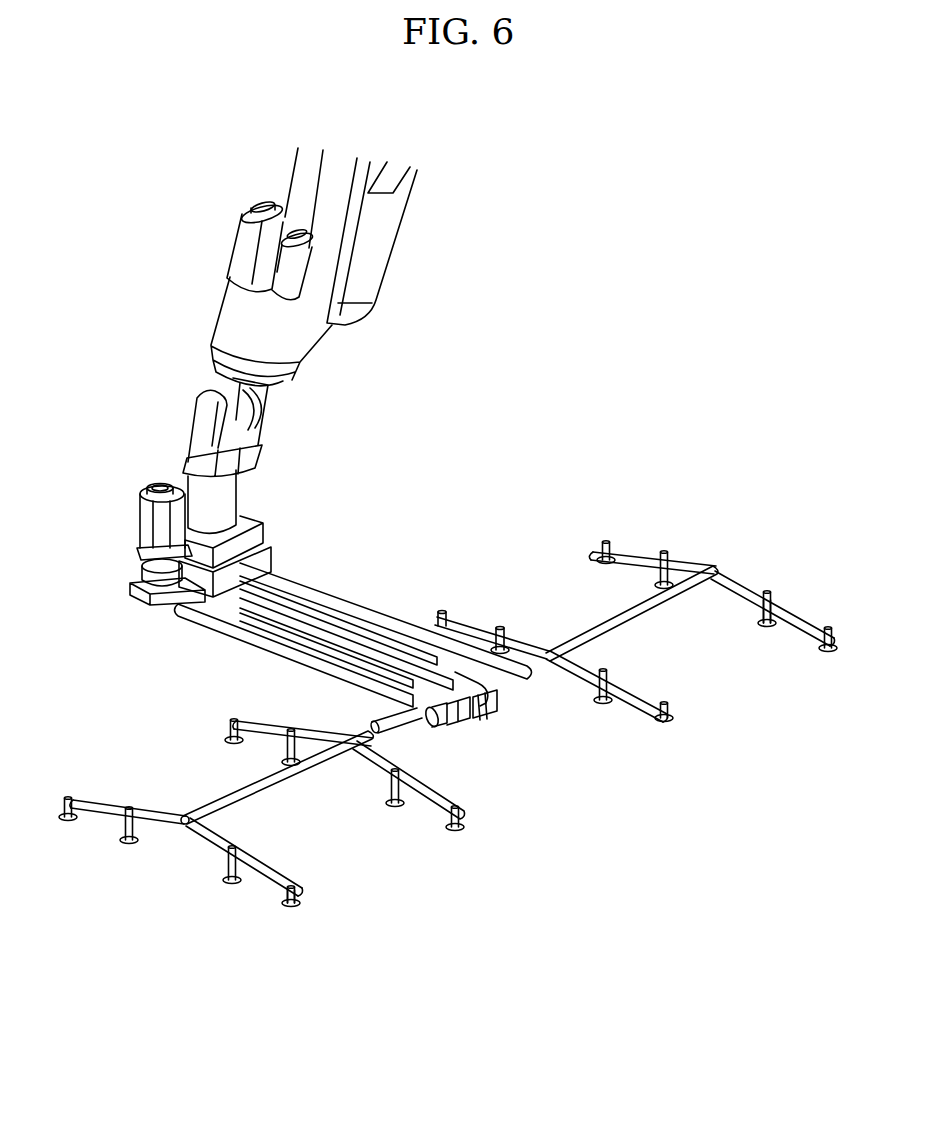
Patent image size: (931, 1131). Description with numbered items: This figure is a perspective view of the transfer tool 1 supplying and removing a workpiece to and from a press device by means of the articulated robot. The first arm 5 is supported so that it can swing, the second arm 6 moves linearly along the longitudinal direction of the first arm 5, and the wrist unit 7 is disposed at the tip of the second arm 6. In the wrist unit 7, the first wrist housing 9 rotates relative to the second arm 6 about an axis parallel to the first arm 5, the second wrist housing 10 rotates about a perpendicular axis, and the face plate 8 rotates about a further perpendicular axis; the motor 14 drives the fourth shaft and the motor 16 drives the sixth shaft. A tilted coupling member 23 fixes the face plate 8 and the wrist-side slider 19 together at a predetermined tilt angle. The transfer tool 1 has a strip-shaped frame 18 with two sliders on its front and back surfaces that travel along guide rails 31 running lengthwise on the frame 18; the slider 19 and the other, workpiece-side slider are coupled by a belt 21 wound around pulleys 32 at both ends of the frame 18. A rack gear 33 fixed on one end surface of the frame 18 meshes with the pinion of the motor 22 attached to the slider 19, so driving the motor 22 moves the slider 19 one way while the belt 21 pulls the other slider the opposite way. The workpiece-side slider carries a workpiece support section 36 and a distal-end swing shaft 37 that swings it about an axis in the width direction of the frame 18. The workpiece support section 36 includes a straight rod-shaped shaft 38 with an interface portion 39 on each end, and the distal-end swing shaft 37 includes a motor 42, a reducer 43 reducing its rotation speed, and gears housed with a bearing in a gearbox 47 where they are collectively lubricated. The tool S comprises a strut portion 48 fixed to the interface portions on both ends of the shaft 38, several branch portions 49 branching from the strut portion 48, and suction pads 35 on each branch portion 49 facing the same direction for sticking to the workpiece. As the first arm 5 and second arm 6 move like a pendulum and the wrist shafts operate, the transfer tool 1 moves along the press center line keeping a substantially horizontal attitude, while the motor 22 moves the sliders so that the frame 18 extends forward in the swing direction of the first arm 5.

The transfer tool 1 is at (400, 505).
The first arm 5 is at (385, 230).
The second arm 6 is at (307, 173).
The wrist unit 7 is at (290, 427).
The face plate 8 is at (188, 462).
The first wrist housing 9 is at (215, 352).
The second wrist housing 10 is at (210, 413).
The motor of the fourth shaft 14 is at (243, 250).
The motor of the sixth shaft 16 is at (304, 268).
The frame 18 is at (317, 590).
The slider 19 is at (272, 567).
The belt 21 is at (350, 627).
The motor 22 is at (147, 523).
The tilted coupling member 23 is at (238, 507).
The guide rails 31 is at (407, 628).
The pulleys 32 is at (485, 718).
The rack gear 33 is at (227, 617).
The suction pads 35 is at (767, 630).
The workpiece support section 36 is at (359, 722).
The distal-end swing shaft 37 is at (430, 755).
The shaft 38 is at (413, 710).
The interface portion 39 is at (392, 733).
The motor 42 is at (453, 727).
The reducer 43 is at (470, 727).
The gearbox 47 is at (497, 705).
The strut portion 48 is at (640, 603).
The branch portions 49 is at (630, 550).
The tool S is at (707, 540).